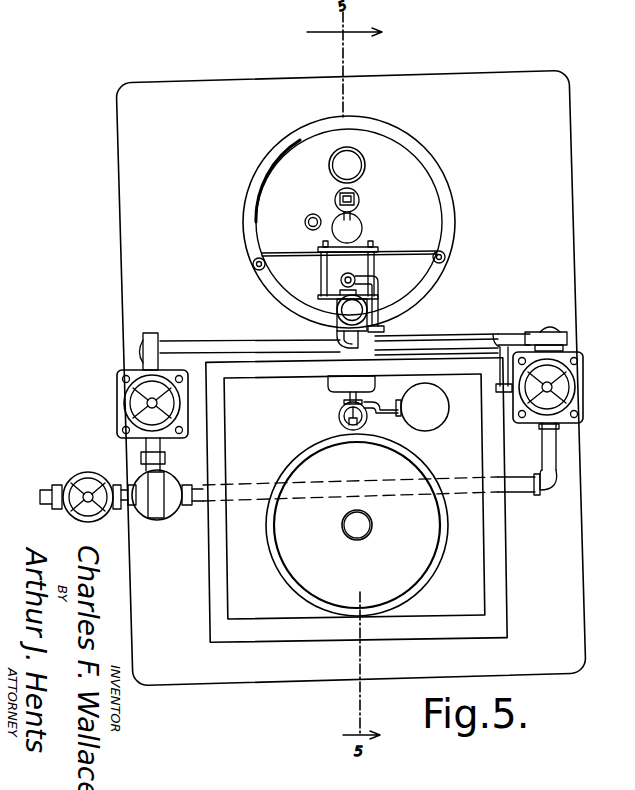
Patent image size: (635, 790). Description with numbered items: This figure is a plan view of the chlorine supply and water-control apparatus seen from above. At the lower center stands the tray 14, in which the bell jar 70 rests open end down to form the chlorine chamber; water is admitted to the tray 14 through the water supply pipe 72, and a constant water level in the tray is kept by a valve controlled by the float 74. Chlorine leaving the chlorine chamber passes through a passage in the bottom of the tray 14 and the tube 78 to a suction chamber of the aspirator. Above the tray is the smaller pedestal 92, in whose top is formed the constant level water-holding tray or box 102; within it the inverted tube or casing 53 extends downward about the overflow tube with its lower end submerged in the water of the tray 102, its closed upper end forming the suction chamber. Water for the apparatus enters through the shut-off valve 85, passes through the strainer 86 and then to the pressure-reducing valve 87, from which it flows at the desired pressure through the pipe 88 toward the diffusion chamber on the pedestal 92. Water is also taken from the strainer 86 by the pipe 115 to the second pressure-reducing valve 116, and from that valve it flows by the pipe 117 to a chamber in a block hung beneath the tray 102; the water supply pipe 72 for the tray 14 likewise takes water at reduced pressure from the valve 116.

The tray 14 is at (213, 562).
The inverted tube or casing 53 is at (365, 168).
The bell jar 70 is at (303, 460).
The water supply pipe 72 is at (455, 338).
The float 74 is at (430, 422).
The tube 78 is at (382, 305).
The shut-off valve 85 is at (88, 474).
The strainer 86 is at (171, 514).
The pressure-reducing valve 87 is at (117, 401).
The pipe 88 is at (249, 341).
The pedestal 92 is at (441, 288).
The constant level water-holding tray or box 102 is at (418, 187).
The pipe 115 is at (510, 491).
The second pressure-reducing valve 116 is at (586, 390).
The pipe 117 is at (511, 333).